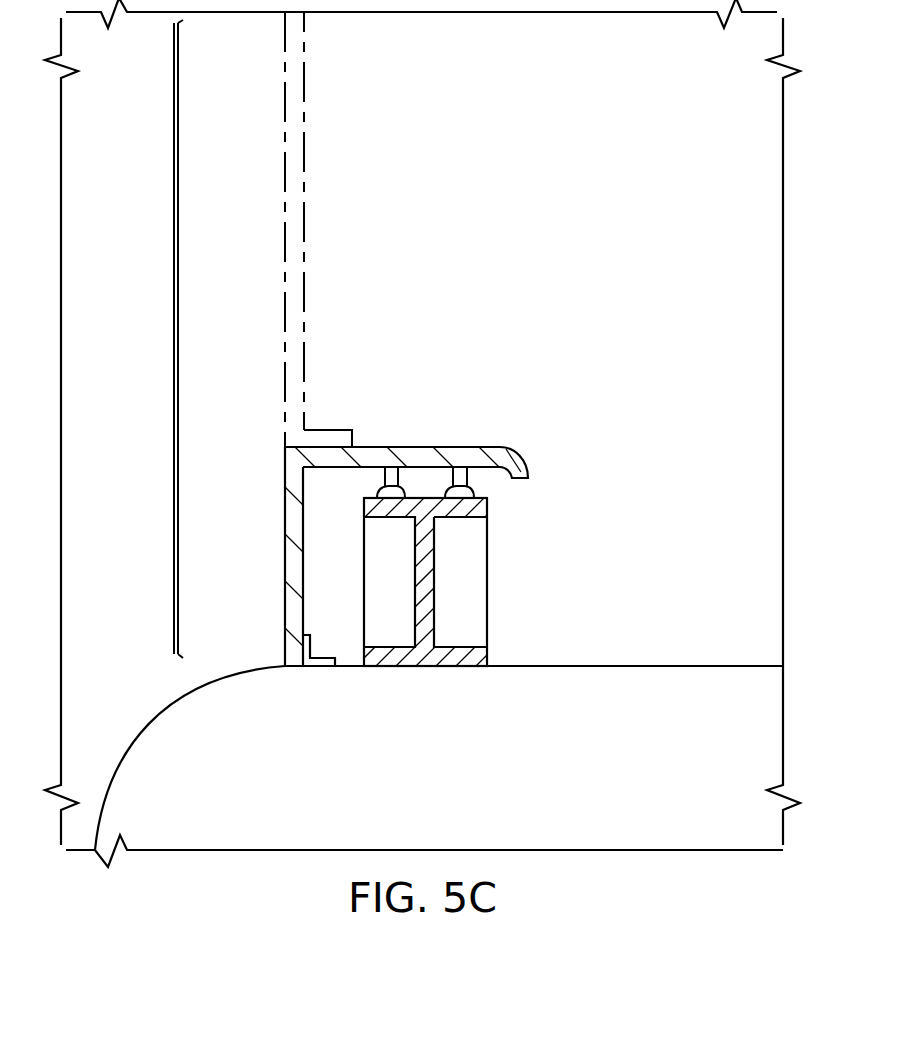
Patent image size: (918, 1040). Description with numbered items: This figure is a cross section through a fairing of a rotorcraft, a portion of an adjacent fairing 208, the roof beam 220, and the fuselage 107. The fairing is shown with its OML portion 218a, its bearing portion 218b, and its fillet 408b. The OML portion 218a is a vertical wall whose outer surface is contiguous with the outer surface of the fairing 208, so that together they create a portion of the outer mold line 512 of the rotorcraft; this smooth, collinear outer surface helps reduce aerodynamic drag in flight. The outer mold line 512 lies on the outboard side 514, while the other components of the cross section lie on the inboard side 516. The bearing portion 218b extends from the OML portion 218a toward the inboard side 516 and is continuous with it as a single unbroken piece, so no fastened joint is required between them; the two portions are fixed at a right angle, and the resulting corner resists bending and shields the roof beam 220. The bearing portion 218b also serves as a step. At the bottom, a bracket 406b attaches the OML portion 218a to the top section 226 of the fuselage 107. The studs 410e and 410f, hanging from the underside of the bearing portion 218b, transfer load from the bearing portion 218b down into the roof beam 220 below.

The fuselage 107 is at (162, 720).
The fairing 208 is at (304, 123).
The roof beam 220 is at (436, 580).
The top section 226 is at (640, 665).
The OML portion 218a is at (285, 560).
The bearing portion 218b is at (468, 447).
The bracket 406b is at (318, 668).
The fillet 408b is at (524, 464).
The stud 410e is at (383, 478).
The stud 410f is at (442, 478).
The outer mold line 512 is at (176, 336).
The outboard side 514 is at (253, 252).
The inboard side 516 is at (490, 252).